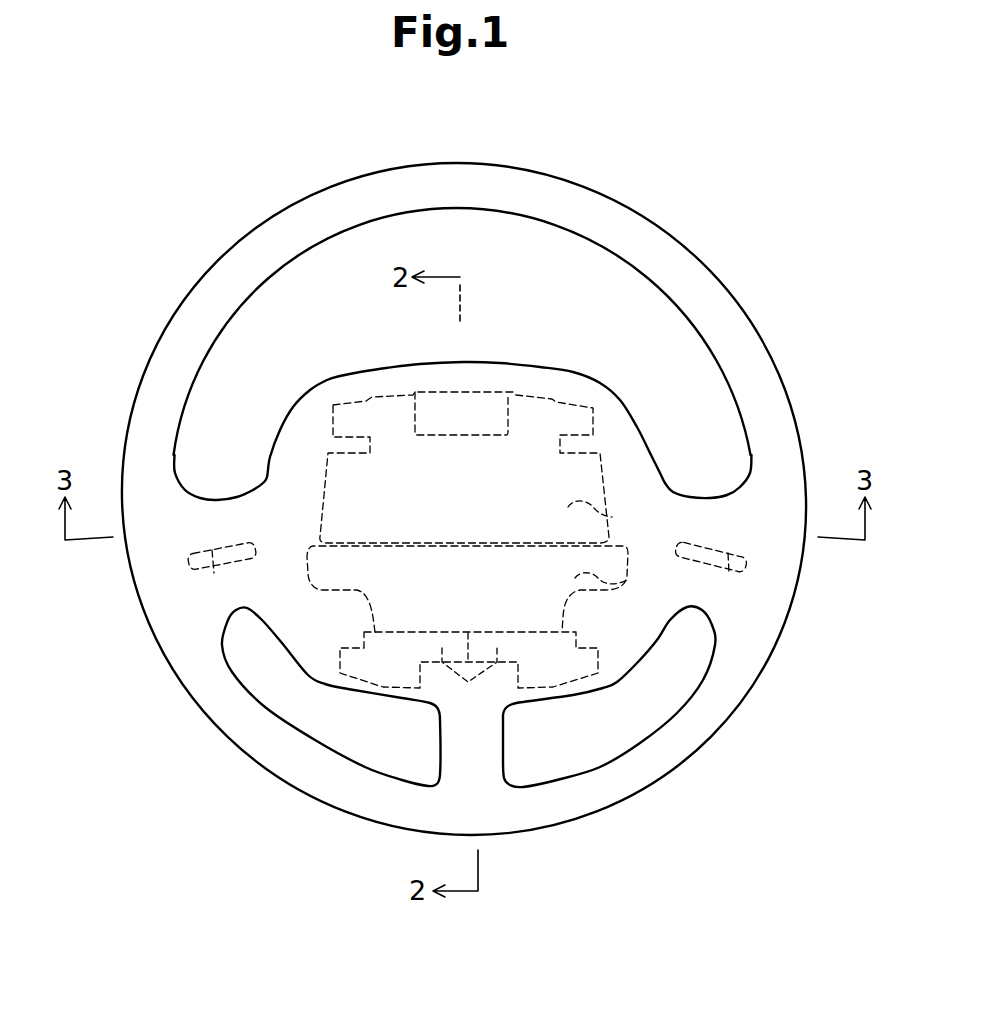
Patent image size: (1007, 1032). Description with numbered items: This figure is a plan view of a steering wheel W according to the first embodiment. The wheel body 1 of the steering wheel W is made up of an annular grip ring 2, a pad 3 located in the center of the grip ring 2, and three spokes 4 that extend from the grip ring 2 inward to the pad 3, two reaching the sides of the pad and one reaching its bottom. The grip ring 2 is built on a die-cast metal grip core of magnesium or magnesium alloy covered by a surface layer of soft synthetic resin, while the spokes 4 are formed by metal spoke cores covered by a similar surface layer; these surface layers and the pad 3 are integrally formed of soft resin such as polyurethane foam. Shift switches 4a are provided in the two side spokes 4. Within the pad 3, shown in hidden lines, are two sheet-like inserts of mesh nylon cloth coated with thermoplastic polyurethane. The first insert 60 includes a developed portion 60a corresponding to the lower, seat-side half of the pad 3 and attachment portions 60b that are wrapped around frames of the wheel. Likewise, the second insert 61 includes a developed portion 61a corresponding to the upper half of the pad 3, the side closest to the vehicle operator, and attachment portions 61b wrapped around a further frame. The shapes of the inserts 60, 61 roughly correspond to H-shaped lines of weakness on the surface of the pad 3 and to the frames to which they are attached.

The steering wheel W is at (661, 180).
The wheel body 1 is at (730, 289).
The grip ring 2 is at (772, 377).
The pad 3 is at (618, 412).
The spokes 4 is at (228, 513).
The shift switches 4a is at (207, 573).
The first insert 60 is at (377, 693).
The developed portion of first insert 60a is at (615, 586).
The attachment portions of first insert 60b is at (469, 674).
The second insert 61 is at (483, 390).
The developed portion of second insert 61a is at (612, 517).
The attachment portions of second insert 61b is at (351, 416).